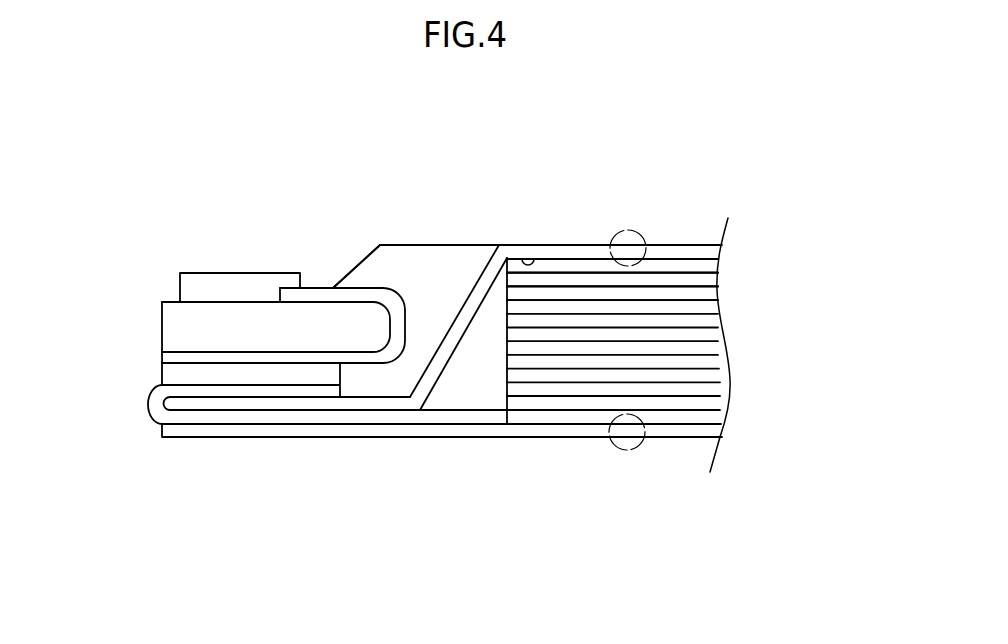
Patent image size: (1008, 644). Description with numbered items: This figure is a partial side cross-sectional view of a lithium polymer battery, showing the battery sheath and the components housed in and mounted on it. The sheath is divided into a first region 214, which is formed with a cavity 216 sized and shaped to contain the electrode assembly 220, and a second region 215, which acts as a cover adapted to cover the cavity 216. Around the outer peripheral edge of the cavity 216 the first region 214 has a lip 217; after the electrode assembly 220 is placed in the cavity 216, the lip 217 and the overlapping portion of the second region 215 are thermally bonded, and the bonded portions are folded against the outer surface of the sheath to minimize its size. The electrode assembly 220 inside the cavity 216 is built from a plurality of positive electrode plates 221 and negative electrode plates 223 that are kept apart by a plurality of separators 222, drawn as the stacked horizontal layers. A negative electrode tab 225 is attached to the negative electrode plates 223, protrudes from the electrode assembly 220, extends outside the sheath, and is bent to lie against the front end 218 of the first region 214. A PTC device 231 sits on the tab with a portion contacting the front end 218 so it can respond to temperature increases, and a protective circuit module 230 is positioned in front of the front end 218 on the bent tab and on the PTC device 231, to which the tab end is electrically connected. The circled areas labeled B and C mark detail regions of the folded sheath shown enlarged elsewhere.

The first region 214 is at (575, 213).
The second region 215 is at (557, 467).
The cavity 216 is at (513, 258).
The lip 217 is at (400, 260).
The front end 218 is at (457, 313).
The electrode assembly 220 is at (699, 314).
The positive electrode plates 221 is at (710, 263).
The separators 222 is at (710, 275).
The negative electrode plates 223 is at (712, 295).
The negative electrode tab 225 is at (383, 353).
The protective circuit module 230 is at (162, 325).
The PTC device 231 is at (170, 372).
The detail region B is at (638, 232).
The detail region C is at (643, 447).